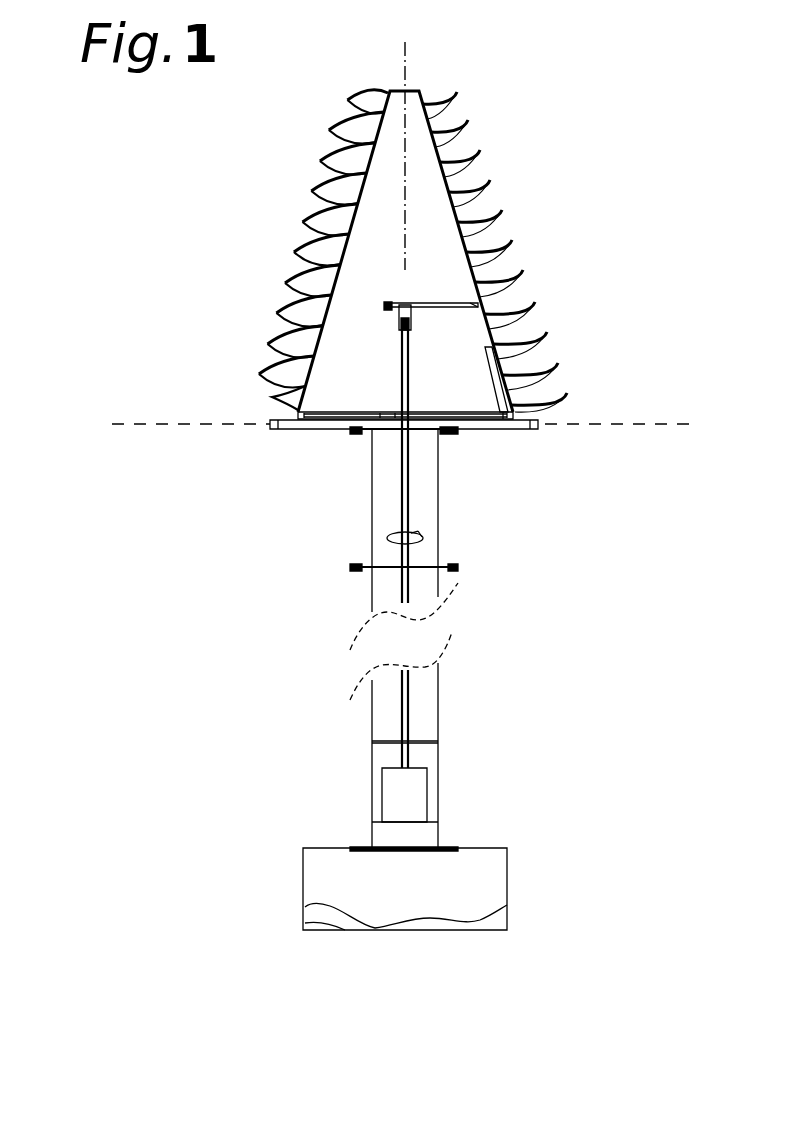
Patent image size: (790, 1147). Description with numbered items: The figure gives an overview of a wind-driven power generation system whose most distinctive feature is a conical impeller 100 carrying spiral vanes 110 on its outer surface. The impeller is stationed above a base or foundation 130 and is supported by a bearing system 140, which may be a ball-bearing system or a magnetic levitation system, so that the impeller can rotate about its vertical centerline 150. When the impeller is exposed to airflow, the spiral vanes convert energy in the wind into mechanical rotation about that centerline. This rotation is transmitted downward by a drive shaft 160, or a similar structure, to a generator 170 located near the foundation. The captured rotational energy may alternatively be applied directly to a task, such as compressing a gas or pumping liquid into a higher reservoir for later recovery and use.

The conical impeller 100 is at (500, 106).
The spiral vanes 110 is at (276, 311).
The base or foundation 130 is at (112, 430).
The bearing system 140 is at (292, 430).
The vertical centerline 150 is at (403, 52).
The drive shaft 160 is at (420, 506).
The generator 170 is at (390, 795).